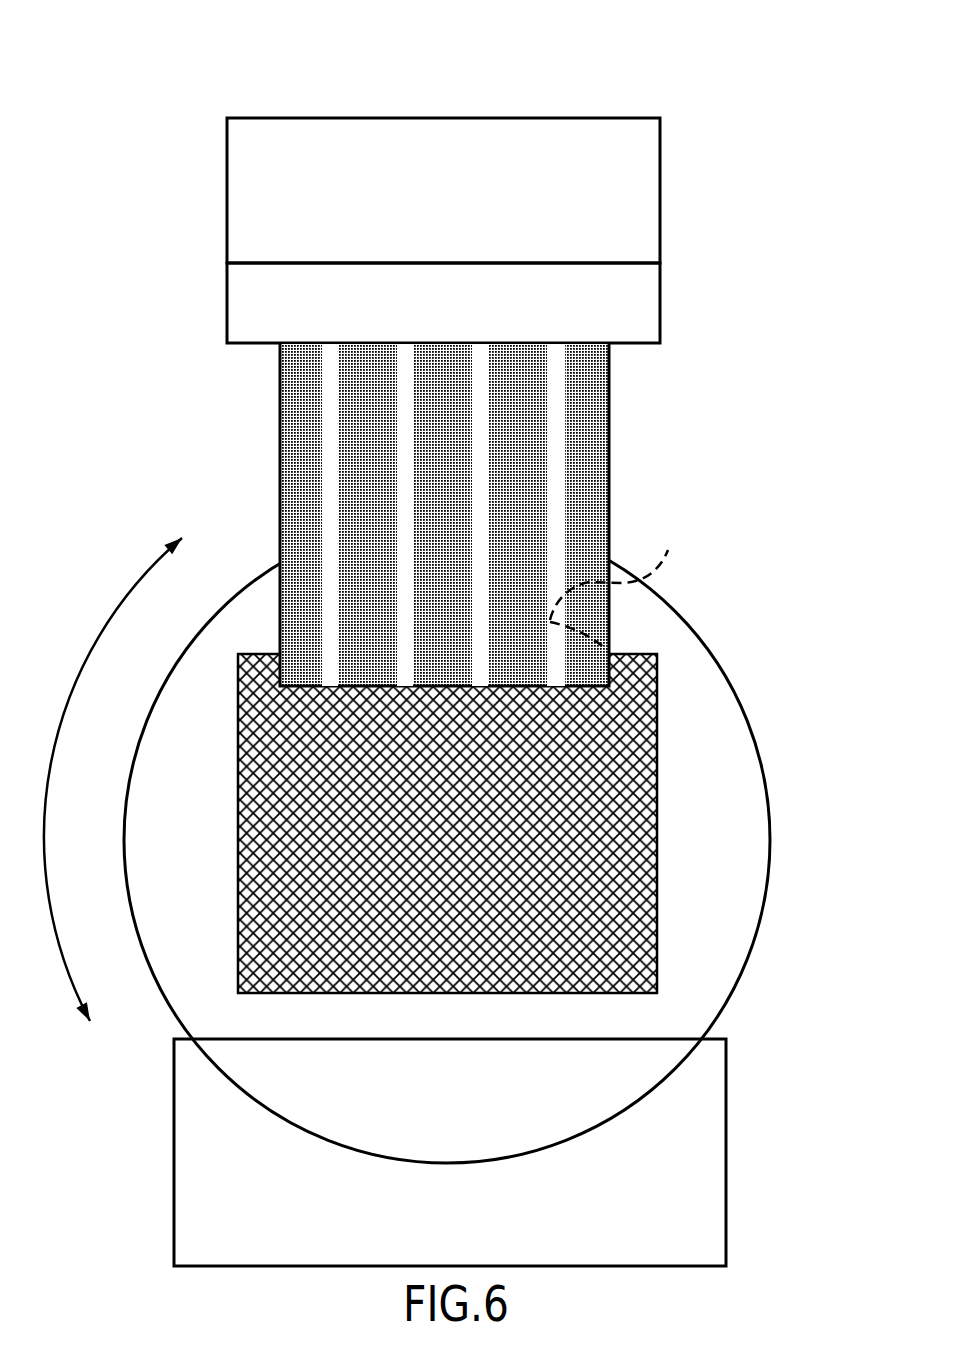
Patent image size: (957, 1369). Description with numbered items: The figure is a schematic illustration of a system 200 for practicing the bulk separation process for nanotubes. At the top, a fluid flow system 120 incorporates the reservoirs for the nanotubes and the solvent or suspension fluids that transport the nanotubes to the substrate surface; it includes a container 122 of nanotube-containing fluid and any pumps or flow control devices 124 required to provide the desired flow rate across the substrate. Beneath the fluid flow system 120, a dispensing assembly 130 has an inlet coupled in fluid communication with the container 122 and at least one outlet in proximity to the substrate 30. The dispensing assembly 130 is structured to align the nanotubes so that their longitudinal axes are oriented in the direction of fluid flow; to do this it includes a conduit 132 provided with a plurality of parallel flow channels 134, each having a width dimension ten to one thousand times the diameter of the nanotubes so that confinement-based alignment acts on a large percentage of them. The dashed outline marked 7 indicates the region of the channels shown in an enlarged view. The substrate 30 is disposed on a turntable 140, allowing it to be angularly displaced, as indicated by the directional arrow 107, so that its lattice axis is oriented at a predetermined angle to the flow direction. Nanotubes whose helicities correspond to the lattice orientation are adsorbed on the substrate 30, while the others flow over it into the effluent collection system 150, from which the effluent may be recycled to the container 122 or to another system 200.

The system 200 is at (128, 80).
The fluid flow system 120 is at (515, 234).
The container of nanotube-containing fluid 122 is at (660, 237).
The pumps or flow control devices 124 is at (660, 308).
The dispensing assembly 130 is at (542, 515).
The conduit 132 is at (610, 475).
The flow channel 134 is at (480, 440).
The detail view region 7 is at (613, 583).
The directional arrow 107 is at (82, 665).
The turntable 140 is at (752, 723).
The substrate 30 is at (657, 848).
The effluent collection system 150 is at (726, 1172).